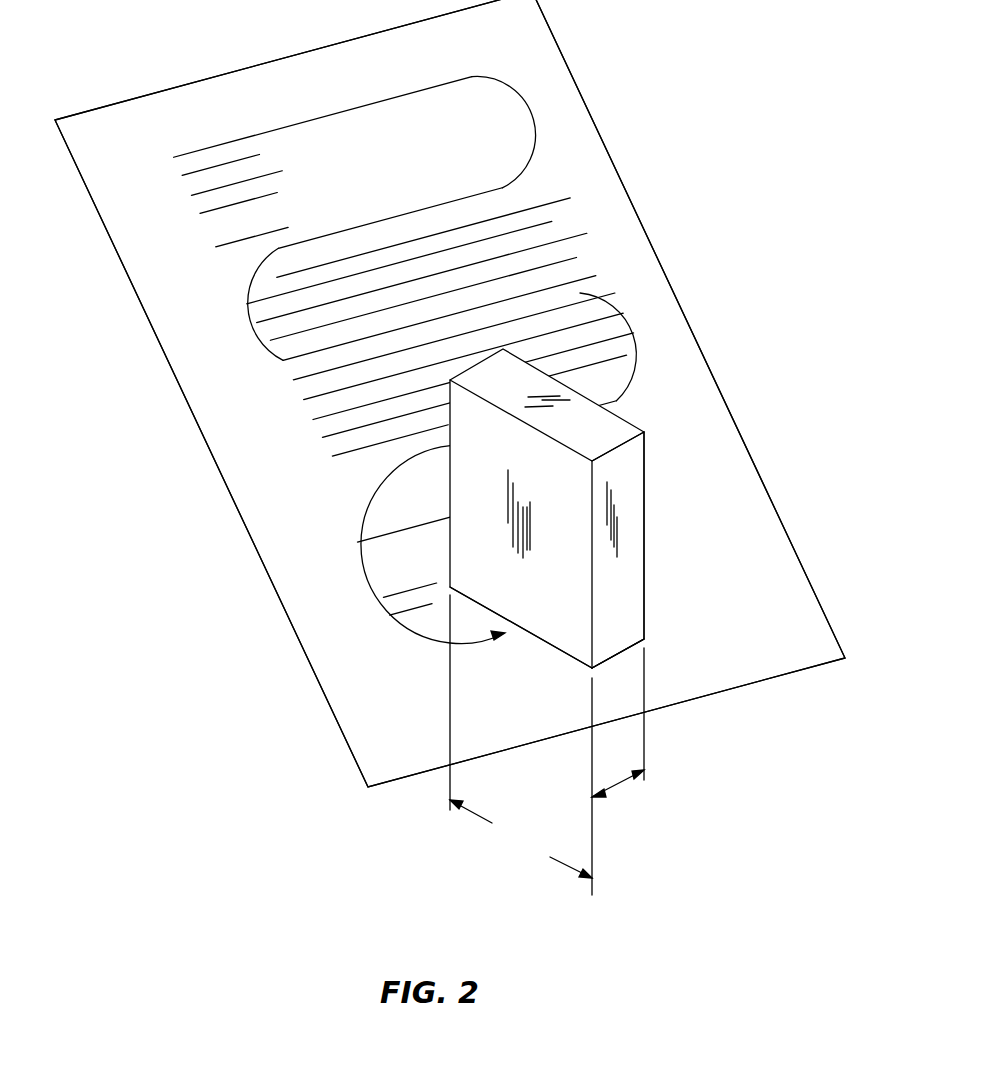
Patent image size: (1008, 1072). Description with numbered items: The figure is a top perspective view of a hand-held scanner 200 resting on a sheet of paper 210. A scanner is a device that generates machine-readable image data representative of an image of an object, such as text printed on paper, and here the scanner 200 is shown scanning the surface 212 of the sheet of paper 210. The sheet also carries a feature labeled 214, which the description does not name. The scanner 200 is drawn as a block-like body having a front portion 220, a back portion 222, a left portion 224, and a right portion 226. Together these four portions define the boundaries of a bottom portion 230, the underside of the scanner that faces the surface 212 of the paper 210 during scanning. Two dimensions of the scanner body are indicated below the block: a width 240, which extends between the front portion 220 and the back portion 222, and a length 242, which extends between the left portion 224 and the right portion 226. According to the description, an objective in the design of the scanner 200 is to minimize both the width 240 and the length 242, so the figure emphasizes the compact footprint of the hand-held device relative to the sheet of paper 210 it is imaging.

The hand-held scanner 200 is at (665, 499).
The sheet of paper 210 is at (690, 251).
The surface 212 is at (598, 195).
The serpentine trace 214 is at (532, 113).
The front portion 220 is at (623, 418).
The back portion 222 is at (545, 625).
The left portion 224 is at (450, 425).
The right portion 226 is at (630, 565).
The bottom portion 230 is at (617, 657).
The width 240 is at (622, 783).
The length 242 is at (521, 745).